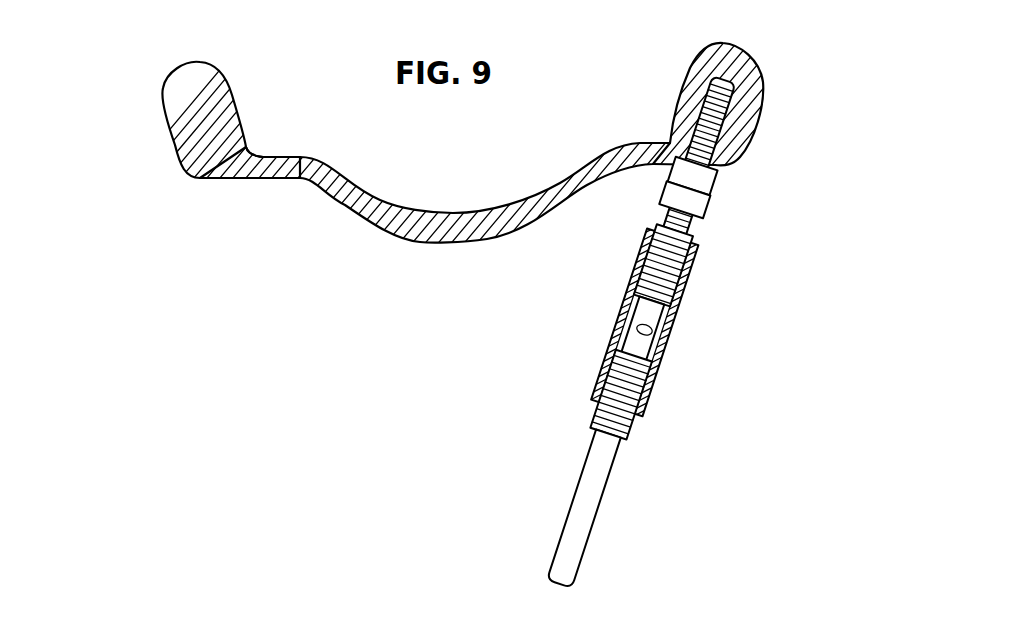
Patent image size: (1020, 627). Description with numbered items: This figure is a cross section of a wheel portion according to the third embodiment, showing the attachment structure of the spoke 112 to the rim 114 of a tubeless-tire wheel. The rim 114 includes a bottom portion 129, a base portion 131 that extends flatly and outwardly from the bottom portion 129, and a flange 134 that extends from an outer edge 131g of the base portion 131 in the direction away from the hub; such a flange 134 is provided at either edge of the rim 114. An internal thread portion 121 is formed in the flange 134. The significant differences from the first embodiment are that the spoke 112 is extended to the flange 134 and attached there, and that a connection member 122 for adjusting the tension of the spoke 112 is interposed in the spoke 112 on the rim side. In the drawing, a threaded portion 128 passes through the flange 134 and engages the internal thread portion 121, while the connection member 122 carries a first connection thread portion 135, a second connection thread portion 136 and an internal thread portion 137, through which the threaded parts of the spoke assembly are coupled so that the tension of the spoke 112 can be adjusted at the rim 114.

The spoke 112 is at (598, 518).
The rim 114 is at (448, 243).
The internal thread portion 121 is at (738, 162).
The connection member 122 is at (676, 330).
The threaded bolt 128 is at (725, 138).
The bottom portion 129 is at (382, 228).
The base portion 131 is at (268, 180).
The outer edge 131g is at (240, 157).
The flange 134 is at (163, 133).
The first connection thread portion 135 is at (655, 383).
The second connection thread portion 136 is at (688, 270).
The internal thread portion 137 is at (663, 350).